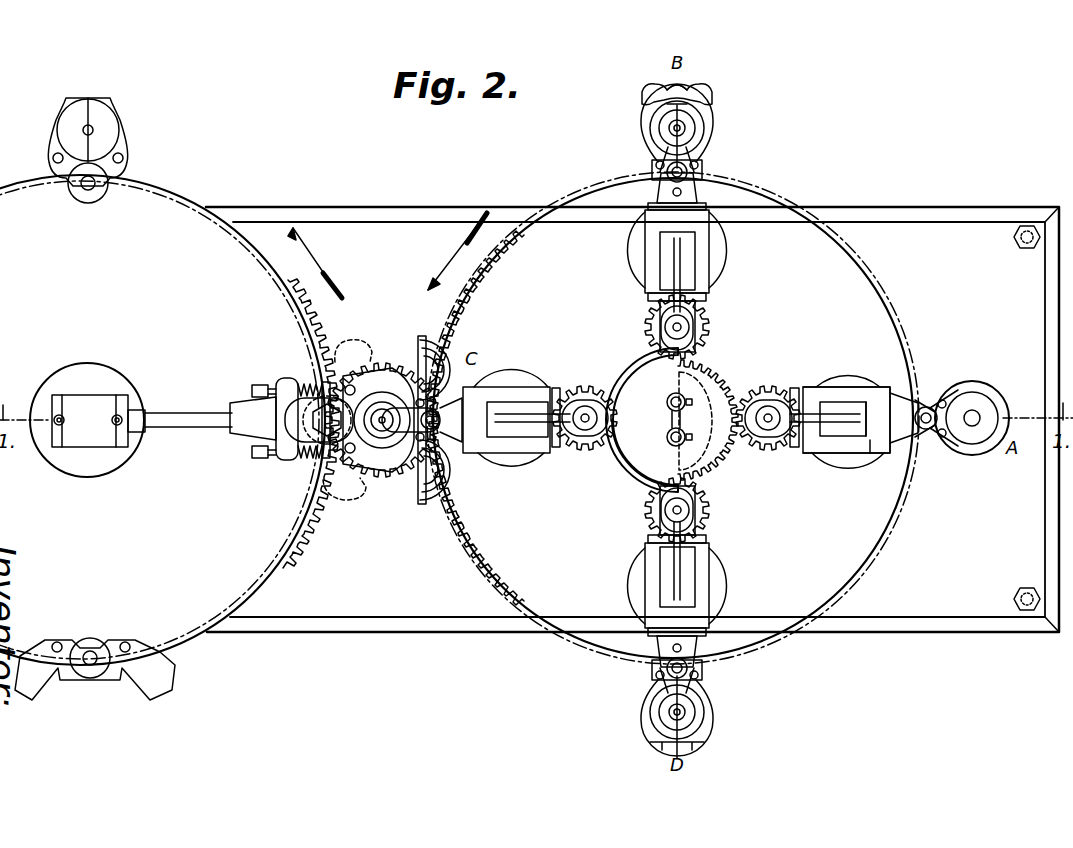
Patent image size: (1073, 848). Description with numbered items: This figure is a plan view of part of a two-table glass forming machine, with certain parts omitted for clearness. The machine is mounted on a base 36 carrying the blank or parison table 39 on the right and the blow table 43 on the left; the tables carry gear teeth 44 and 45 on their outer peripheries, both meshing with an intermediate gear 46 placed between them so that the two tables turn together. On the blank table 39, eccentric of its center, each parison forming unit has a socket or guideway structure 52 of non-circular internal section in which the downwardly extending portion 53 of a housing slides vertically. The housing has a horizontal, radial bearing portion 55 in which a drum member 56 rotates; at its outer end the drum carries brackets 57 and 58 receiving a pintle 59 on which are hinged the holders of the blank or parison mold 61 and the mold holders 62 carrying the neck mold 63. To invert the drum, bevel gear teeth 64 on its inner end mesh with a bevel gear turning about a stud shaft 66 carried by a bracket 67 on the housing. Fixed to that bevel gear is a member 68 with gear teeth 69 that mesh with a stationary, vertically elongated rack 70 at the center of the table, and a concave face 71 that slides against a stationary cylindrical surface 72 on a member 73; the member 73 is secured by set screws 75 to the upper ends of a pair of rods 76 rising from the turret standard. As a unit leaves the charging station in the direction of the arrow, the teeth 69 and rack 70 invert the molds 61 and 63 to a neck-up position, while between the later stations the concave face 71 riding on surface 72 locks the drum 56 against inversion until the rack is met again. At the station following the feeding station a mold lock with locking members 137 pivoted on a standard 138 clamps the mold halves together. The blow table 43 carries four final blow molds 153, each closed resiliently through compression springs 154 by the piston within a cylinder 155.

The base 36 is at (945, 603).
The blank or parison table 39 is at (890, 535).
The blow table 43 is at (172, 628).
The gear teeth 44 is at (453, 512).
The gear teeth 45 is at (305, 323).
The intermediate gear 46 is at (388, 368).
The socket or guideway structure 52 is at (728, 252).
The downwardly extending portion of housing 53 is at (822, 385).
The bearing portion 55 is at (870, 456).
The drum member 56 is at (903, 398).
The bracket 57 is at (693, 640).
The bracket 58 is at (918, 440).
The pintle 59 is at (924, 406).
The blank or parison mold 61 is at (425, 362).
The mold holder 62 is at (693, 693).
The neck mold 63 is at (378, 430).
The bevel gear teeth 64 is at (793, 388).
The stud shaft 66 is at (758, 440).
The bracket 67 is at (822, 430).
The member 68 is at (695, 340).
The gear teeth 69 is at (773, 450).
The stationary rack 70 is at (703, 468).
The concave face 71 is at (700, 353).
The stationary cylindrical surface 72 is at (625, 370).
The member 73 is at (622, 462).
The set screws 75 is at (700, 412).
The rods 76 is at (667, 437).
The locking members 137 is at (655, 88).
The standard 138 is at (682, 86).
The final blow molds 153 is at (70, 118).
The compression springs 154 is at (297, 387).
The cylinder 155 is at (90, 400).